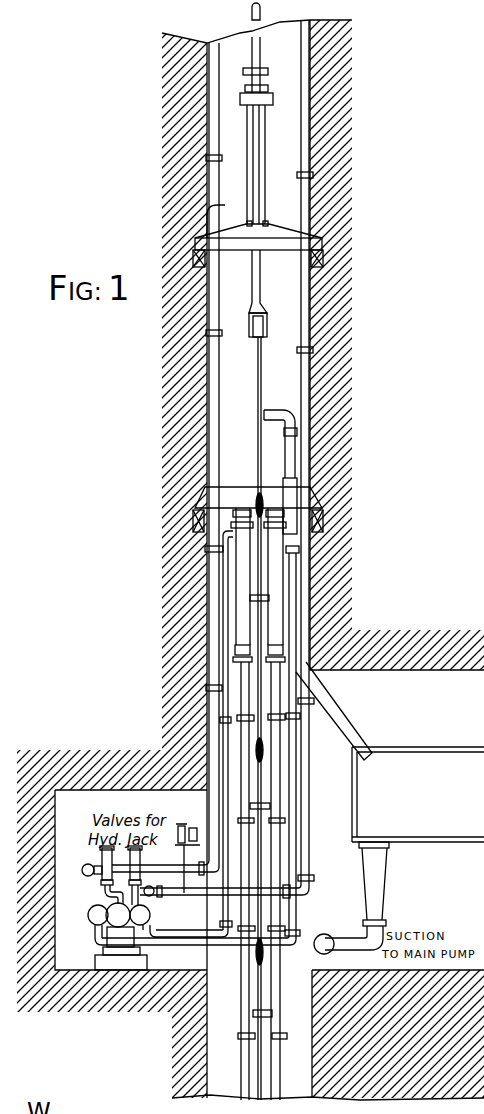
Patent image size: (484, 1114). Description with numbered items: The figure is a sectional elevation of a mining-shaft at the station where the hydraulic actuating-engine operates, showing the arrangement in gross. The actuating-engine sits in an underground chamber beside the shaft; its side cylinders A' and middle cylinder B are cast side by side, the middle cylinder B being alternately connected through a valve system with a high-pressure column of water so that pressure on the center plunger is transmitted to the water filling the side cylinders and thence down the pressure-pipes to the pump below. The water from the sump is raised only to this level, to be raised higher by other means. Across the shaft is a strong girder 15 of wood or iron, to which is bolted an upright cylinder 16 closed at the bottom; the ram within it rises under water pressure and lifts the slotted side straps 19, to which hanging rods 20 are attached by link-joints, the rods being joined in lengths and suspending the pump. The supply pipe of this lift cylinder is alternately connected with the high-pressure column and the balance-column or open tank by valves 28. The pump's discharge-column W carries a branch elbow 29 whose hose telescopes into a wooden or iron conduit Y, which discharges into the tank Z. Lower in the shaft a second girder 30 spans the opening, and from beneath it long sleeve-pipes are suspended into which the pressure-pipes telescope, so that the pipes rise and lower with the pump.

The girder 15 is at (258, 236).
The upright cylinder 16 is at (262, 163).
The side straps 19 is at (262, 289).
The hanging rods 20 is at (263, 357).
The valves 28 is at (187, 848).
The branch elbow 29 is at (268, 409).
The girder 30 is at (258, 509).
The discharge-column W is at (257, 455).
The conduit Y is at (347, 697).
The tank Z is at (399, 850).
The middle cylinder B is at (121, 936).
The side cylinders A' is at (122, 925).